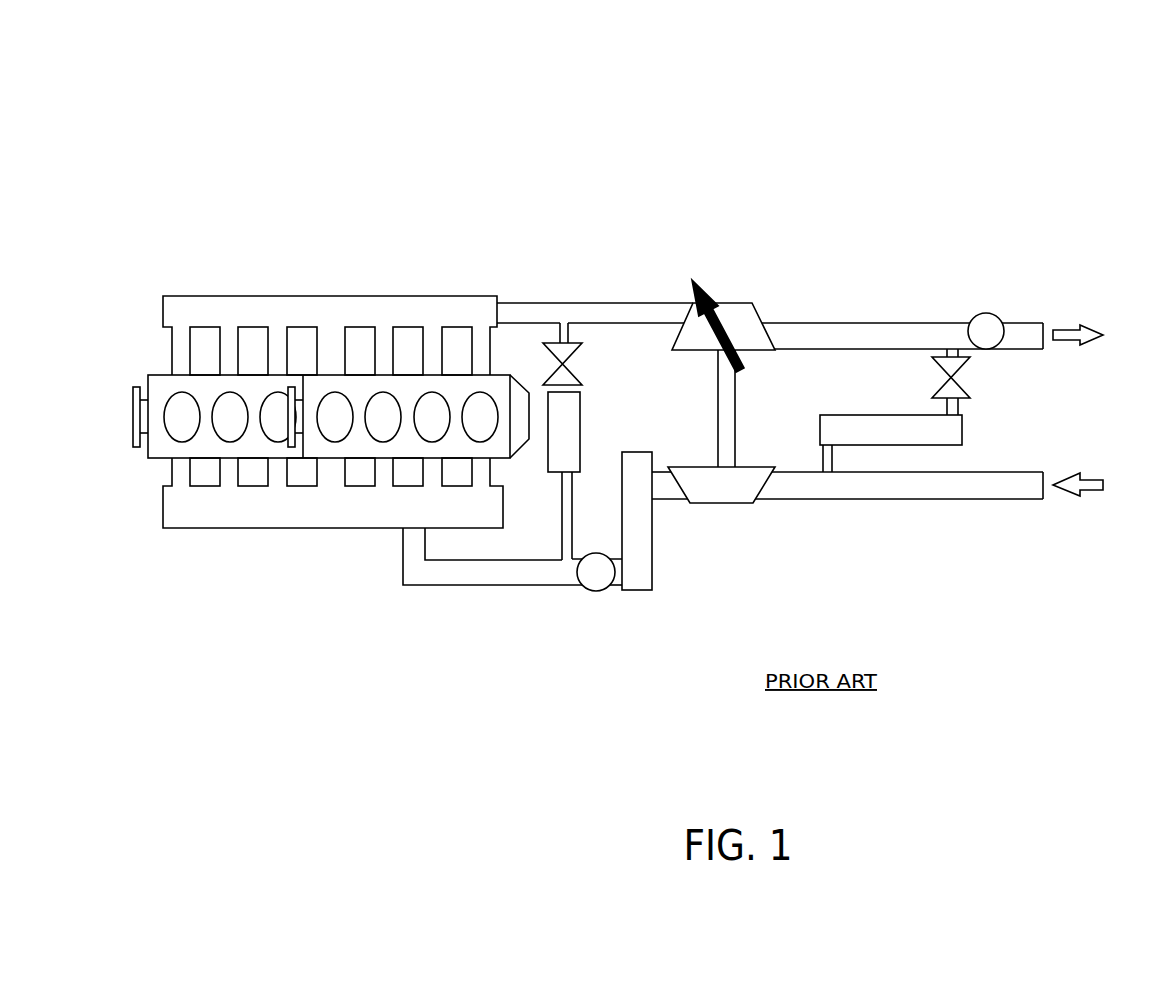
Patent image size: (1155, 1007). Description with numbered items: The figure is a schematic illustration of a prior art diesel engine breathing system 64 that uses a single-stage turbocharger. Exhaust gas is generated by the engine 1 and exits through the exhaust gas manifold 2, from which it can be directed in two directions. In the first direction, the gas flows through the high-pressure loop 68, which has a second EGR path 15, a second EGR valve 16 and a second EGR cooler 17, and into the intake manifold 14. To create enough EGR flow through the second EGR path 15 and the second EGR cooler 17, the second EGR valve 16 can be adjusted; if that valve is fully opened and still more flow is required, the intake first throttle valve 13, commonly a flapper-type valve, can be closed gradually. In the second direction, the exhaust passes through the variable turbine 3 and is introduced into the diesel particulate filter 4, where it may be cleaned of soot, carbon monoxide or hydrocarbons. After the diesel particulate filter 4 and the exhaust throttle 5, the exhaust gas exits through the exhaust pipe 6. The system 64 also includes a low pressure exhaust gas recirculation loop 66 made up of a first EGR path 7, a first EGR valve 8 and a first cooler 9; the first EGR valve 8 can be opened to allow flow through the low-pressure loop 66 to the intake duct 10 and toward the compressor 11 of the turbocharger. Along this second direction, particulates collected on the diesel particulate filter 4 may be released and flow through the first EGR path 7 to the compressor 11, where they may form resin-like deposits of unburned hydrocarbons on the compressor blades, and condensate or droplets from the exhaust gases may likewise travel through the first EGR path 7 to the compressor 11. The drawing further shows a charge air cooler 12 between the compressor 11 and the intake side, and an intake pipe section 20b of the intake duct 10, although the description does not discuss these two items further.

The engine 1 is at (322, 385).
The exhaust gas manifold 2 is at (367, 272).
The variable turbine 3 is at (750, 293).
The diesel particulate filter 4 is at (852, 293).
The exhaust throttle 5 is at (1005, 308).
The exhaust pipe 6 is at (1037, 319).
The first EGR path 7 is at (843, 468).
The first EGR valve 8 is at (965, 378).
The first cooler 9 is at (970, 433).
The intake duct 10 is at (1042, 507).
The compressor 11 is at (700, 519).
The charge air cooler 12 is at (637, 600).
The intake first throttle valve 13 is at (591, 600).
The intake manifold 14 is at (308, 492).
The second EGR path 15 is at (552, 520).
The second EGR valve 16 is at (550, 328).
The second EGR cooler 17 is at (533, 458).
The intake pipe section 20b is at (822, 512).
The engine breathing system 64 is at (873, 162).
The low pressure exhaust gas recirculation loop 66 is at (923, 377).
The high-pressure loop 68 is at (517, 525).